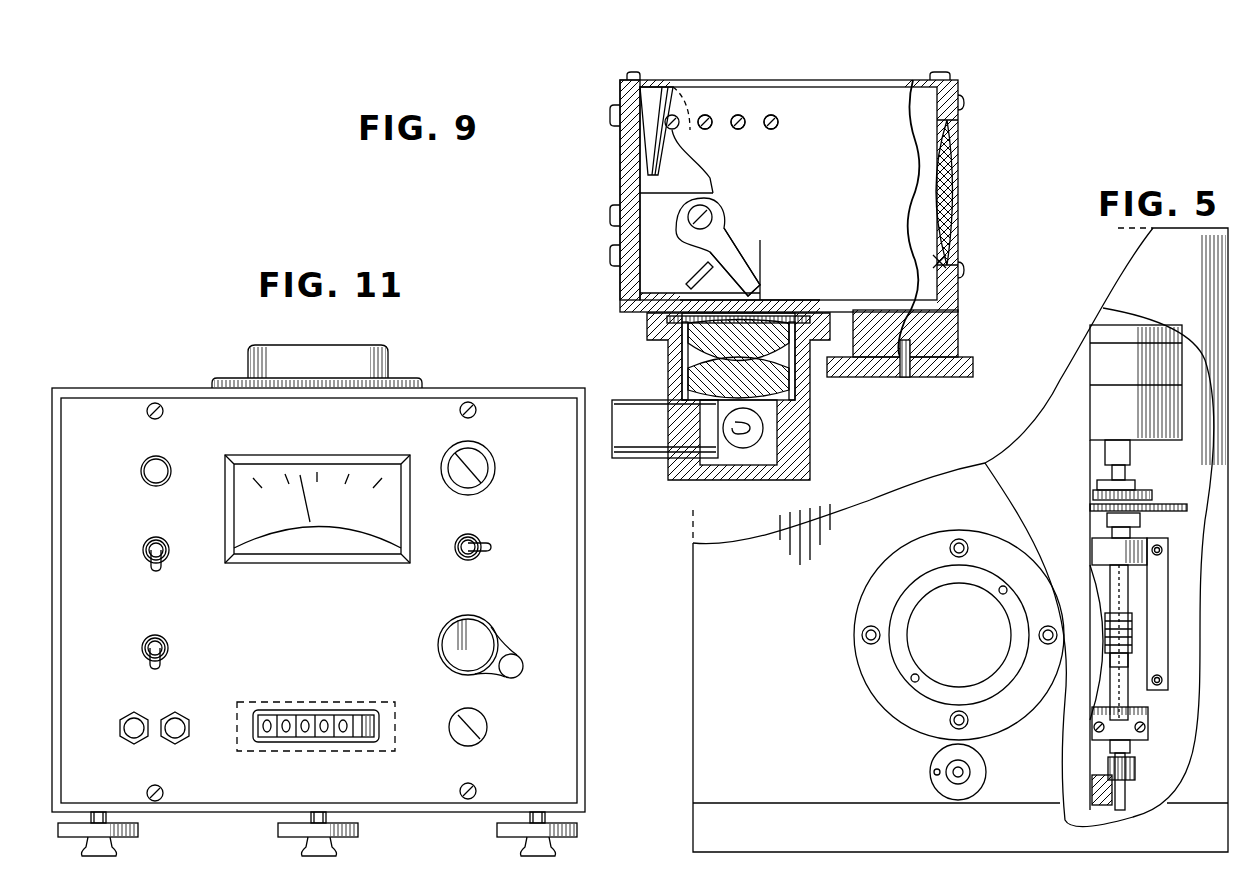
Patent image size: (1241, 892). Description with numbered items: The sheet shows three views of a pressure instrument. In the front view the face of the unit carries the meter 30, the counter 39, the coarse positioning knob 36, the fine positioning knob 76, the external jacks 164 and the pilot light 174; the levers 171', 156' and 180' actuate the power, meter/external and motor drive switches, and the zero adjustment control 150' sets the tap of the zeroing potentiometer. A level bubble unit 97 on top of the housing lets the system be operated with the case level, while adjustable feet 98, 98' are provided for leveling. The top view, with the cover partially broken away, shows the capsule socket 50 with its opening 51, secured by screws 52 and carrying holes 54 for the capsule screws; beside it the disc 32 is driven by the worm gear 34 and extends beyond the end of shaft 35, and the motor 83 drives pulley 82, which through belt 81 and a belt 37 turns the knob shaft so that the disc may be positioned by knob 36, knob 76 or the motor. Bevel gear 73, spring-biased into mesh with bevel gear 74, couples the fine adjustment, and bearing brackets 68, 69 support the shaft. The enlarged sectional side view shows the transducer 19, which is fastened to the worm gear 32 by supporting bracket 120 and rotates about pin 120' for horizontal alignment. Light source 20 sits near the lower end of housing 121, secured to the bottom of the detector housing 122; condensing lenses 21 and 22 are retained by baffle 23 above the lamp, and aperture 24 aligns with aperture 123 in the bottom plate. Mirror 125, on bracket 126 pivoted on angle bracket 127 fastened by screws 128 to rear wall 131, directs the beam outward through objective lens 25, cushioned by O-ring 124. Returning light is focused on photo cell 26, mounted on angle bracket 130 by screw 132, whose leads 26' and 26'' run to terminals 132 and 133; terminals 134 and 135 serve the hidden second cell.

In FIG. 9, the transducer 19 is at (836, 211).
In FIG. 9, the light source 20 is at (738, 446).
In FIG. 9, the condensing lens 21 is at (722, 351).
In FIG. 9, the condensing lens 22 is at (752, 352).
In FIG. 9, the baffle 23 is at (792, 322).
In FIG. 9, the aperture 24 is at (770, 316).
In FIG. 9, the objective lens 25 is at (930, 175).
In FIG. 9, the photo cell 26 is at (684, 162).
In FIG. 9, the electrical lead 26' is at (701, 108).
In FIG. 9, the electrical lead 26'' is at (745, 110).
In FIG. 11, the meter 30 is at (312, 551).
In FIG. 9, the disc 32 is at (846, 378).
In FIG. 5, the disc 32 is at (1088, 596).
In FIG. 5, the worm gear 34 is at (1134, 630).
In FIG. 5, the shaft 35 is at (1126, 786).
In FIG. 11, the knob 36 is at (440, 645).
In FIG. 5, the drive belt 37 is at (1090, 507).
In FIG. 11, the counter 39 is at (305, 710).
In FIG. 11, the capsule socket 50 is at (310, 345).
In FIG. 5, the capsule socket 50 is at (940, 537).
In FIG. 5, the opening 51 is at (914, 600).
In FIG. 5, the screws 52 is at (871, 645).
In FIG. 5, the holes 54 is at (1000, 593).
In FIG. 5, the upper bearing bracket 68 is at (1092, 546).
In FIG. 5, the lower bearing bracket 69 is at (1148, 719).
In FIG. 5, the bevel gear 73 is at (1135, 770).
In FIG. 5, the bevel gear 74 is at (1096, 786).
In FIG. 11, the knob 76 is at (450, 732).
In FIG. 5, the belt 81 is at (1140, 494).
In FIG. 5, the pulley 82 is at (1100, 481).
In FIG. 5, the motor 83 is at (1090, 419).
In FIG. 11, the level bubble unit 97 is at (330, 384).
In FIG. 5, the level bubble unit 97 is at (930, 758).
In FIG. 11, the adjustable feet 98 is at (326, 836).
In FIG. 11, the center foot 98' is at (330, 836).
In FIG. 9, the supporting bracket 120 is at (928, 333).
In FIG. 9, the pin 120' is at (923, 372).
In FIG. 9, the housing 121 is at (812, 444).
In FIG. 9, the housing 122 is at (822, 80).
In FIG. 9, the aperture 123 is at (745, 300).
In FIG. 9, the O-ring 124 is at (933, 262).
In FIG. 9, the mirror 125 is at (690, 280).
In FIG. 9, the mounting bracket 126 is at (722, 250).
In FIG. 9, the angle bracket 127 is at (676, 252).
In FIG. 9, the screws 128 is at (610, 255).
In FIG. 9, the angle bracket 130 is at (652, 96).
In FIG. 9, the rear wall 131 is at (620, 168).
In FIG. 9, the screw / terminal 132 is at (610, 113).
In FIG. 9, the terminal 133 is at (710, 128).
In FIG. 9, the terminal 134 is at (742, 128).
In FIG. 9, the terminal 135 is at (776, 127).
In FIG. 11, the zero adjustment control 150' is at (473, 457).
In FIG. 11, the lever 156' is at (140, 648).
In FIG. 11, the external jacks 164 is at (140, 742).
In FIG. 11, the lever 171' is at (128, 554).
In FIG. 11, the indicator lamp 174 is at (141, 470).
In FIG. 11, the lever 180' is at (476, 548).